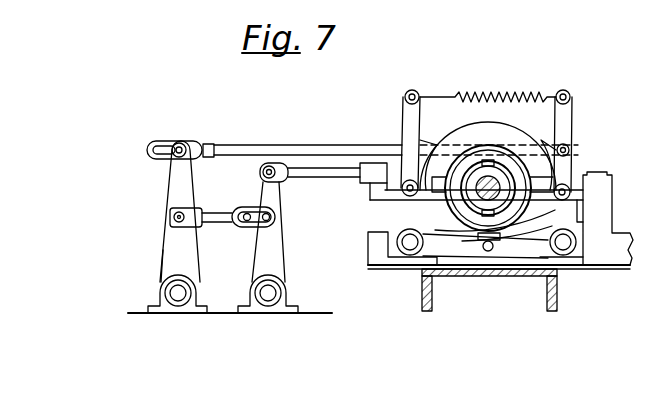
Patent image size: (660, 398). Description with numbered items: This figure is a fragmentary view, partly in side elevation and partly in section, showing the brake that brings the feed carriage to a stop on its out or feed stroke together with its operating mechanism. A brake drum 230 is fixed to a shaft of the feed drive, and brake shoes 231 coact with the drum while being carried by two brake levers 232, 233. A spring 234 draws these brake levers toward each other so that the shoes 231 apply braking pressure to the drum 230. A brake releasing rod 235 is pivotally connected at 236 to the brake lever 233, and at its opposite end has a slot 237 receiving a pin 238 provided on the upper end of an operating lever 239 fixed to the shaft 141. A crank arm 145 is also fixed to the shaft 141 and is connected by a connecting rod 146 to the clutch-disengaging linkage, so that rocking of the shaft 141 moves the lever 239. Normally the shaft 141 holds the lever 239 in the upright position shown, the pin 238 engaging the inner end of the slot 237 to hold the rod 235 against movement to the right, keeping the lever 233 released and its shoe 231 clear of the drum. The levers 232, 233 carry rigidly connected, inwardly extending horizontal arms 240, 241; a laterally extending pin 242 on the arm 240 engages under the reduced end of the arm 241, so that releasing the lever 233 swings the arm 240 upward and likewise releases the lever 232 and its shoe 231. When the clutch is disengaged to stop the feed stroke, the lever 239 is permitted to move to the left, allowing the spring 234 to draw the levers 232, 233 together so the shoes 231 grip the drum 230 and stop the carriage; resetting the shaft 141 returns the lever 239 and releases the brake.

The shaft 141 is at (178, 297).
The crank arm 145 is at (172, 259).
The connecting rod 146 is at (220, 218).
The brake drum 230 is at (486, 132).
The brake shoes 231 is at (437, 143).
The brake lever 232 is at (408, 108).
The brake lever 233 is at (570, 128).
The spring 234 is at (500, 95).
The brake releasing rod 235 is at (303, 148).
The pivotal connection 236 is at (569, 151).
The slot 237 is at (202, 143).
The pin 238 is at (179, 143).
The operating lever 239 is at (182, 192).
The horizontal arm 240 is at (452, 250).
The horizontal arm 241 is at (533, 248).
The pin 242 is at (488, 252).